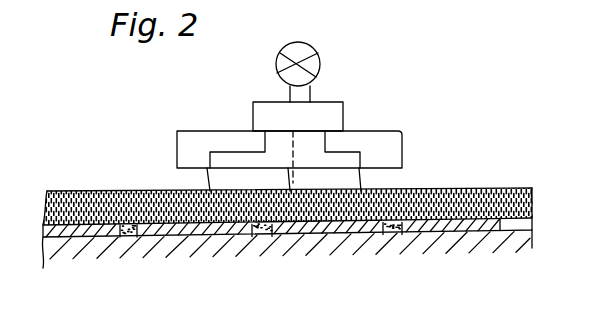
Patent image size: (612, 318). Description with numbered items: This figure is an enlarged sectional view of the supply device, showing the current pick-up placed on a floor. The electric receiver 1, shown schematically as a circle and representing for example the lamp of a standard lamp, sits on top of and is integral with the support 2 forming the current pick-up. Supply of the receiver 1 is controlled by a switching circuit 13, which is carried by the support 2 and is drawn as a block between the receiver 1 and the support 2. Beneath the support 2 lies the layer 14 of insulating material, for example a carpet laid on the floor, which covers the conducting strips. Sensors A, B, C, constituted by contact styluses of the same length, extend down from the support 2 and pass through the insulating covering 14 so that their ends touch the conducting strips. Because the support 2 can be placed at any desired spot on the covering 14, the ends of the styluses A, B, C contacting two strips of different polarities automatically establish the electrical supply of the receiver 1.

The electric receiver 1 is at (316, 64).
The current pick-up support 2 is at (406, 140).
The switching circuit 13 is at (343, 110).
The insulating covering layer 14 is at (73, 190).
The contact stylus sensor A is at (203, 180).
The contact stylus sensor B is at (290, 178).
The contact stylus sensor C is at (364, 178).